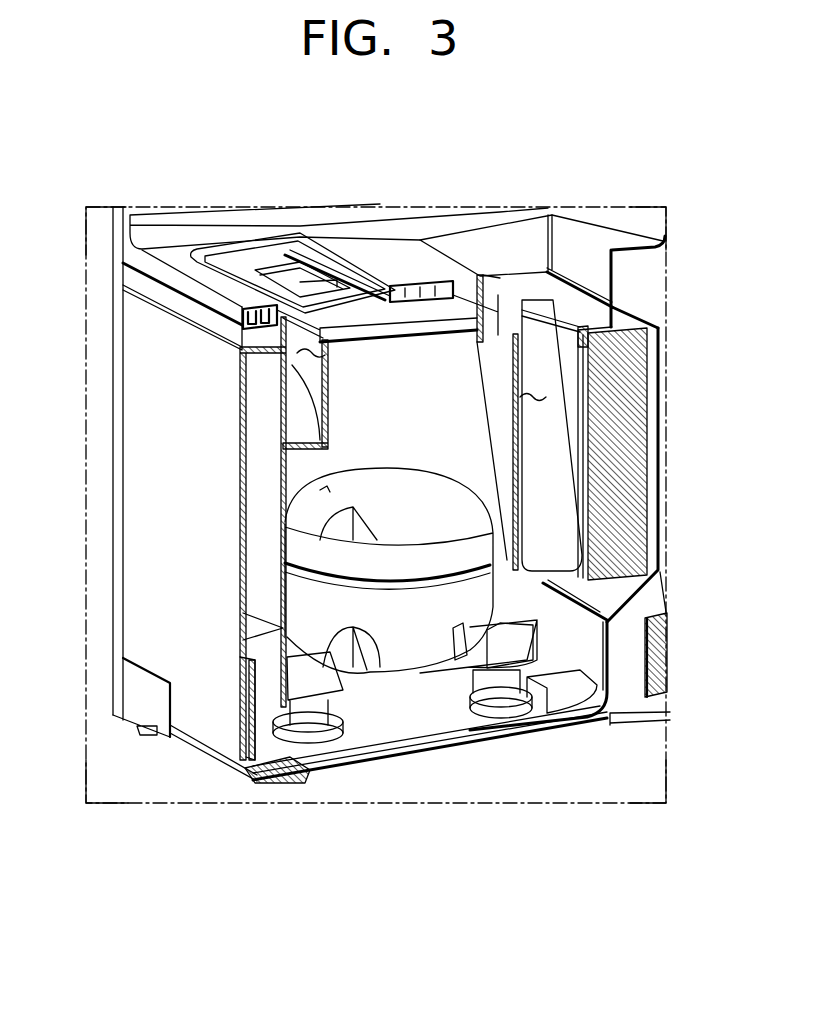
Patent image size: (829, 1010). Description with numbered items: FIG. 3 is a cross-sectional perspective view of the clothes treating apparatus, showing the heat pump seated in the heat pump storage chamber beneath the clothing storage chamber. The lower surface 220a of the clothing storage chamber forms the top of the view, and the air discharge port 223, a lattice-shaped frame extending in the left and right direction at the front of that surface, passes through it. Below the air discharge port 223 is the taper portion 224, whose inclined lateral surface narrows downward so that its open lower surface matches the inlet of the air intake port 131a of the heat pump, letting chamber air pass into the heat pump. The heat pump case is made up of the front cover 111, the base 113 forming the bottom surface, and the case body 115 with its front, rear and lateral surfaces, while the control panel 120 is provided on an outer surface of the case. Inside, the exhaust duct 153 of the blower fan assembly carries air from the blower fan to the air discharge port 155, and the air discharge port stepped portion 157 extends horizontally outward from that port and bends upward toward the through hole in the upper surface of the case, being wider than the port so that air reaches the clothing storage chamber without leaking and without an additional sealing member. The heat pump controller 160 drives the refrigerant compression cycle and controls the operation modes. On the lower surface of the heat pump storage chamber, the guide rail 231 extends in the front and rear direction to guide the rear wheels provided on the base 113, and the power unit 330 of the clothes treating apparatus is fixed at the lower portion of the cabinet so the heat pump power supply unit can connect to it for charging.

The front cover 111 is at (137, 502).
The base 113 is at (365, 727).
The case body 115 is at (614, 600).
The control panel 120 is at (197, 457).
The air intake port 131a is at (303, 360).
The exhaust duct 153 is at (530, 385).
The air discharge port 155 is at (543, 345).
The air discharge port stepped portion 157 is at (567, 312).
The heat pump controller 160 is at (640, 368).
The lower surface of the clothing storage chamber 220a is at (383, 252).
The air discharge port 223 is at (314, 278).
The taper portion 224 is at (297, 303).
The guide rail 231 is at (333, 760).
The power unit 330 is at (660, 647).